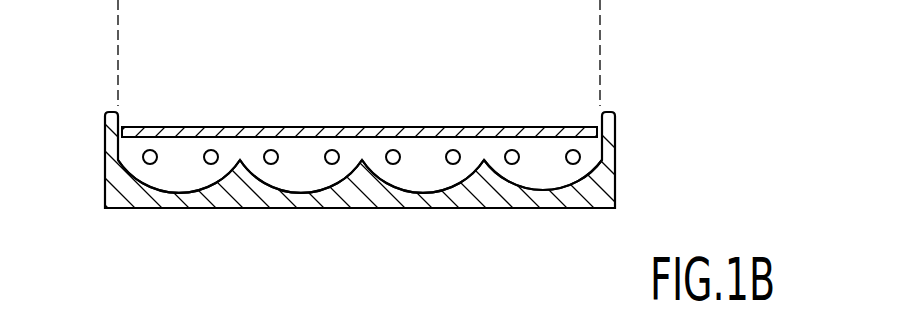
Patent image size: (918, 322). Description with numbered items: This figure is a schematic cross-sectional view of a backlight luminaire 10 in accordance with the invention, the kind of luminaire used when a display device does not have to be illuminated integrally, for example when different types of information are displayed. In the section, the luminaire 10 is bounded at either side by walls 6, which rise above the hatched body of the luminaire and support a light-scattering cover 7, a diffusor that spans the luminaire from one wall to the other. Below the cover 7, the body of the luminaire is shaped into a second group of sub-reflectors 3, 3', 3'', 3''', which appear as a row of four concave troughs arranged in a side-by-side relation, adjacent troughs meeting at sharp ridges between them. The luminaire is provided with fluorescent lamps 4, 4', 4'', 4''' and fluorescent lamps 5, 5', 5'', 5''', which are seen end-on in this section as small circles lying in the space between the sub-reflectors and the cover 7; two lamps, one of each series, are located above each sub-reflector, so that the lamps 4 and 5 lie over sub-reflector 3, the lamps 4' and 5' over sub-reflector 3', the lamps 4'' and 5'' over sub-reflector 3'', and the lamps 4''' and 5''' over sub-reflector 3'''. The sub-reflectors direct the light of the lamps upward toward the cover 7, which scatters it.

The backlight luminaire 10 is at (343, 129).
The walls 6 is at (112, 140).
The light-scattering cover 7 is at (542, 127).
The sub-reflector 3 is at (179, 206).
The sub-reflector 3' is at (301, 206).
The sub-reflector 3'' is at (423, 206).
The sub-reflector 3''' is at (543, 206).
The fluorescent lamp 4 is at (149, 115).
The fluorescent lamp 4' is at (269, 115).
The fluorescent lamp 4'' is at (389, 115).
The fluorescent lamp 4''' is at (508, 115).
The fluorescent lamp 5 is at (209, 115).
The fluorescent lamp 5' is at (330, 115).
The fluorescent lamp 5'' is at (457, 115).
The fluorescent lamp 5''' is at (577, 115).